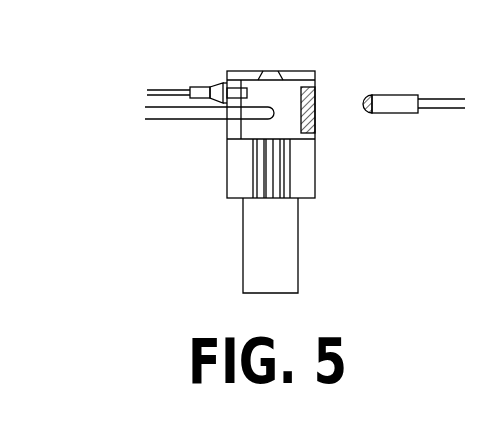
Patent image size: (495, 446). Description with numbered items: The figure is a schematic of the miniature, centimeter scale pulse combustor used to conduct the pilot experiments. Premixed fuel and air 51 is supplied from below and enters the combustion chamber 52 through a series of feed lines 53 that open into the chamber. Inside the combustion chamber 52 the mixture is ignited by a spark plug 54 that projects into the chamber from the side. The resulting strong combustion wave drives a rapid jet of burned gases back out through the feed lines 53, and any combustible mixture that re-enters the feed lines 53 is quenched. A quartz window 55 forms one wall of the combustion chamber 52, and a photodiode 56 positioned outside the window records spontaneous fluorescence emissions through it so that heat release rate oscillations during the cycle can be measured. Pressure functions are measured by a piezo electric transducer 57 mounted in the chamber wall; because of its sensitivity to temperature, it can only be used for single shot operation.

The premixed fuel and air 51 is at (273, 258).
The combustion chamber 52 is at (282, 105).
The feed lines 53 is at (252, 172).
The spark plug 54 is at (155, 115).
The quartz window 55 is at (318, 128).
The photodiode 56 is at (395, 93).
The piezo electric transducer 57 is at (225, 82).